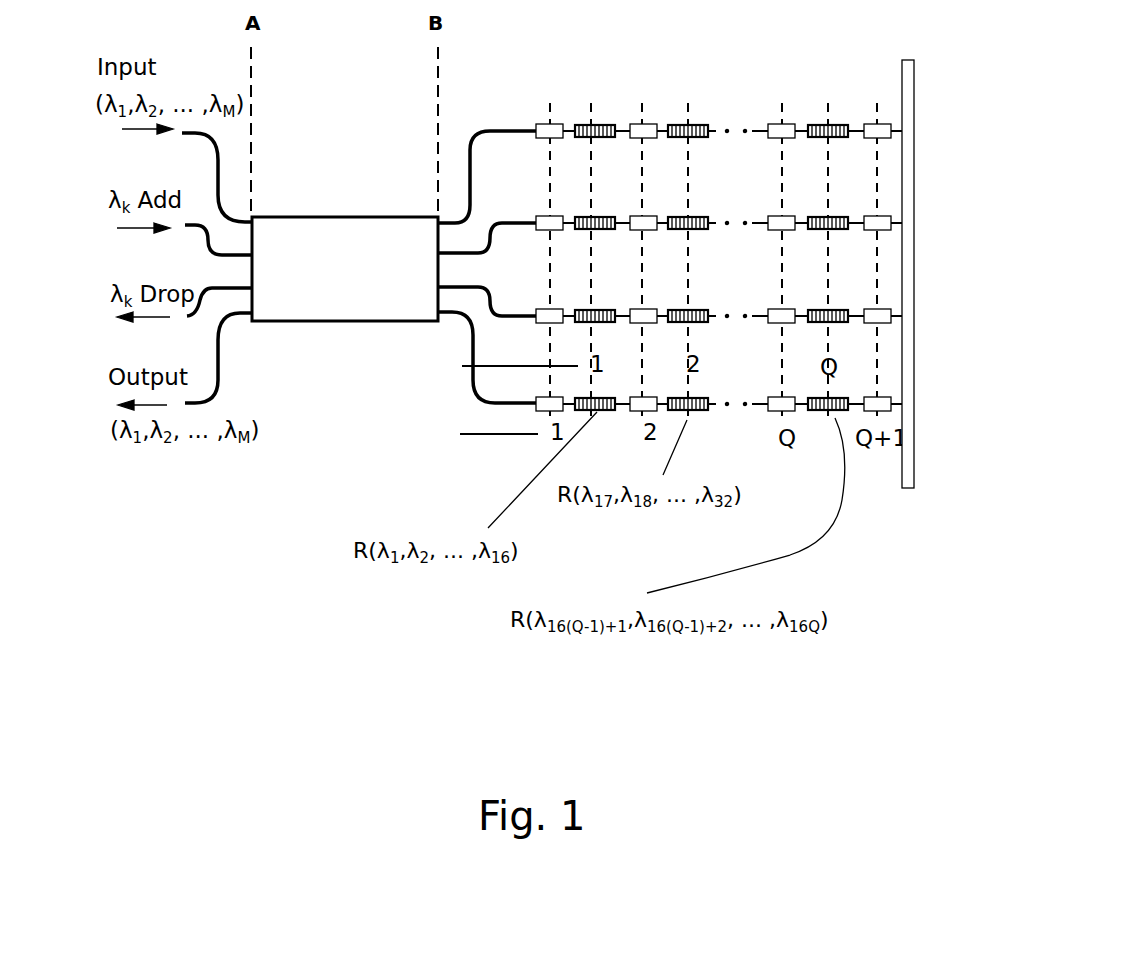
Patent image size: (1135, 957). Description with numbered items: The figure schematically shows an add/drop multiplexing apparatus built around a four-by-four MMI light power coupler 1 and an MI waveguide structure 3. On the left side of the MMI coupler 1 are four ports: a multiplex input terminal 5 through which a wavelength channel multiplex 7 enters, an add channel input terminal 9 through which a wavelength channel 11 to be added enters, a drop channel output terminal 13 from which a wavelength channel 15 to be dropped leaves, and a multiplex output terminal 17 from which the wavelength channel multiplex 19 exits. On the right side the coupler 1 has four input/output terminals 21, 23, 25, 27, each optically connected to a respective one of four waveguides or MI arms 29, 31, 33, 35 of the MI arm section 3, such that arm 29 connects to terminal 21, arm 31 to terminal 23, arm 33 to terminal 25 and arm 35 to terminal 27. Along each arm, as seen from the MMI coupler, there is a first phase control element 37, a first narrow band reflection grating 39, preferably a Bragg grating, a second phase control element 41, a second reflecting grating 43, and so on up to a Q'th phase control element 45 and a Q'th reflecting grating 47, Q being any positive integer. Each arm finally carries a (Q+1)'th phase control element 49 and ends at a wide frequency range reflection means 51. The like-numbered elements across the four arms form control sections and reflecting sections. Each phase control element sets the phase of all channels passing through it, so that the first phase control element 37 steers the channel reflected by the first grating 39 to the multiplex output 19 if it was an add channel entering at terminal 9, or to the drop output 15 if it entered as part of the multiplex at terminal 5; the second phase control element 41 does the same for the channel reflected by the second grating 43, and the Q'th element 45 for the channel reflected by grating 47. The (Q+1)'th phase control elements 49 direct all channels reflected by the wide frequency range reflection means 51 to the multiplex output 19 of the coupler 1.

The 4×4 MMI light power coupler 1 is at (316, 216).
The MI waveguide structure 3 is at (734, 385).
The multiplex input terminal 5 is at (249, 222).
The wavelength channel multiplex 7 is at (145, 130).
The add channel input terminal 9 is at (250, 255).
The wavelength channel to be added 11 is at (135, 232).
The drop channel output terminal 13 is at (252, 277).
The wavelength channel to be dropped 15 is at (160, 322).
The multiplex output terminal 17 is at (233, 323).
The wavelength channel multiplex output 19 is at (148, 402).
The input/output terminal 21 is at (440, 218).
The input/output terminal 23 is at (440, 247).
The input/output terminal 25 is at (440, 282).
The input/output terminal 27 is at (447, 320).
The MI arm 29 is at (752, 100).
The MI arm 31 is at (752, 223).
The MI arm 33 is at (752, 316).
The MI arm 35 is at (752, 404).
The first phase control element 37 is at (563, 95).
The first narrow band reflection grating 39 is at (604, 95).
The second phase control element 41 is at (658, 95).
The second reflecting grating 43 is at (703, 95).
The Q'th phase control element 45 is at (793, 96).
The Q'th reflecting grating 47 is at (829, 96).
The (Q+1)'th phase control element 49 is at (877, 90).
The wide frequency range reflection means 51 is at (914, 88).